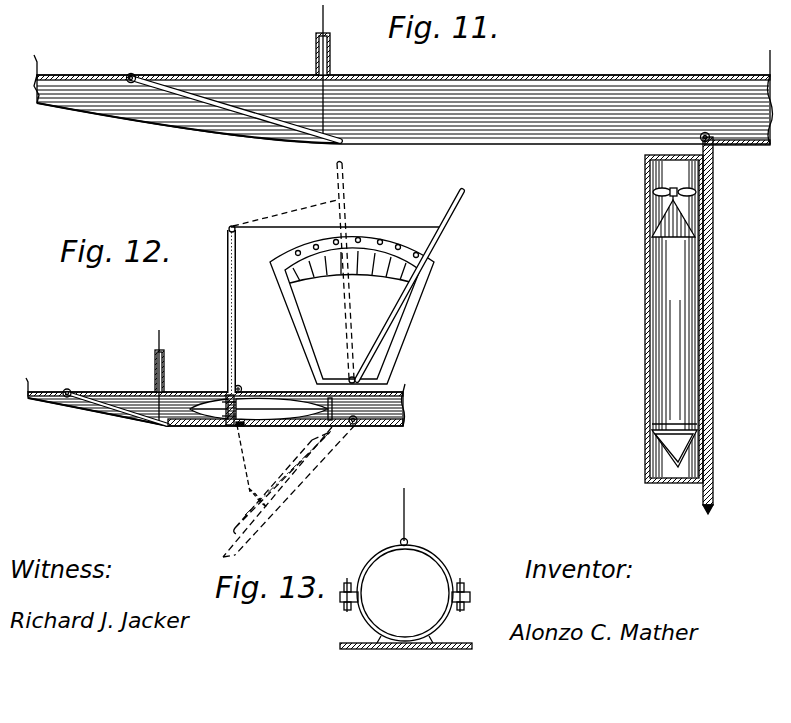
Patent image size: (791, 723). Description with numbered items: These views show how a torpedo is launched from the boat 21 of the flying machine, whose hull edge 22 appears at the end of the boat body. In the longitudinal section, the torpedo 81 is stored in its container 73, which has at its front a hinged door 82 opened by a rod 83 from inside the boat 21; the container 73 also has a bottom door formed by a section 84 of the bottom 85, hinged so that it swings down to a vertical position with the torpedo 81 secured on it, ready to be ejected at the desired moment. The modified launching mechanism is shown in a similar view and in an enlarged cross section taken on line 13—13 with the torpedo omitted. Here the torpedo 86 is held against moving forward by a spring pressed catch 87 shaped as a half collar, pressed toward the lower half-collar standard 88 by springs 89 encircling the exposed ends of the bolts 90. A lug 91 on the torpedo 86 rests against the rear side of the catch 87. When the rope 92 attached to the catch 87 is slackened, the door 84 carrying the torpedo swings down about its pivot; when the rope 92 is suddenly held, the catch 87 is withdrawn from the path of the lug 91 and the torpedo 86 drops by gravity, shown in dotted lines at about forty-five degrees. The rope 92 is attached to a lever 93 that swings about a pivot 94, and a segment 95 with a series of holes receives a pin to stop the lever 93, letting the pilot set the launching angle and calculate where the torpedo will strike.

In FIG. 12, the section line 13 is at (223, 375).
In FIG. 11, the boat 21 is at (768, 72).
In FIG. 12, the boat 21 is at (410, 392).
In FIG. 11, the beveled edge of board 22 is at (68, 112).
In FIG. 12, the beveled edge of board 22 is at (48, 410).
In FIG. 11, the torpedo container 73 is at (652, 216).
In FIG. 11, the torpedo 81 is at (674, 327).
In FIG. 11, the hinged door 82 is at (212, 112).
In FIG. 12, the hinged door 82 is at (108, 410).
In FIG. 11, the rod 83 is at (321, 23).
In FIG. 12, the rod 83 is at (157, 340).
In FIG. 11, the door section 84 is at (713, 338).
In FIG. 12, the door section 84 is at (200, 427).
In FIG. 11, the bottom 85 is at (740, 142).
In FIG. 12, the torpedo 86 is at (284, 408).
In FIG. 12, the spring pressed catch 87 is at (226, 396).
In FIG. 13, the spring pressed catch 87 is at (436, 565).
In FIG. 12, the standard 88 is at (240, 427).
In FIG. 13, the standard 88 is at (444, 614).
In FIG. 13, the springs 89 is at (341, 597).
In FIG. 13, the bolts 90 is at (349, 580).
In FIG. 12, the lug 91 is at (241, 389).
In FIG. 12, the rope 92 is at (227, 313).
In FIG. 13, the rope 92 is at (404, 518).
In FIG. 12, the lever 93 is at (405, 300).
In FIG. 12, the pivot 94 is at (350, 378).
In FIG. 12, the segment 95 is at (372, 240).